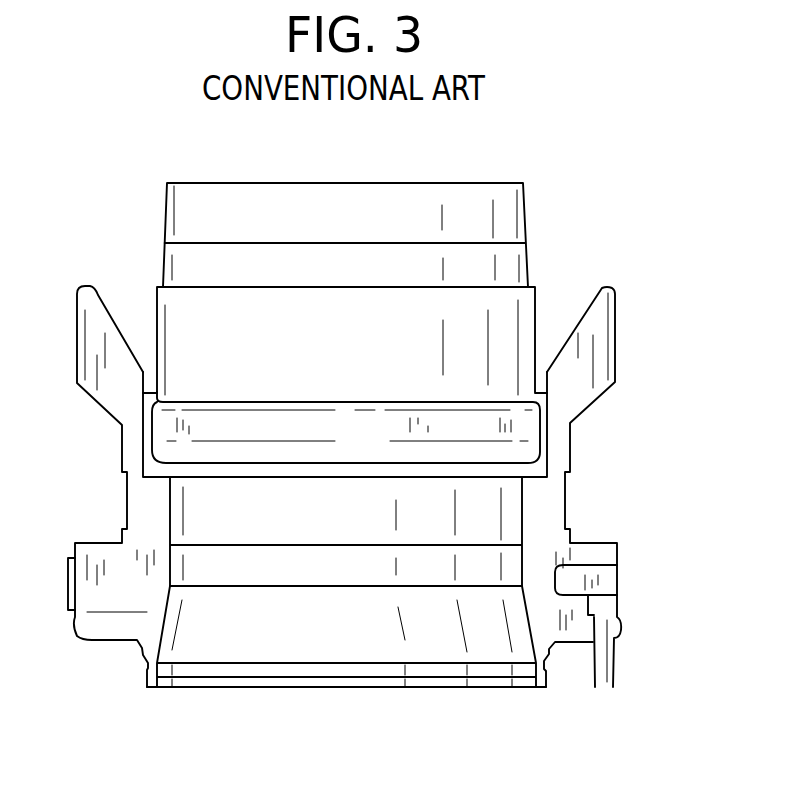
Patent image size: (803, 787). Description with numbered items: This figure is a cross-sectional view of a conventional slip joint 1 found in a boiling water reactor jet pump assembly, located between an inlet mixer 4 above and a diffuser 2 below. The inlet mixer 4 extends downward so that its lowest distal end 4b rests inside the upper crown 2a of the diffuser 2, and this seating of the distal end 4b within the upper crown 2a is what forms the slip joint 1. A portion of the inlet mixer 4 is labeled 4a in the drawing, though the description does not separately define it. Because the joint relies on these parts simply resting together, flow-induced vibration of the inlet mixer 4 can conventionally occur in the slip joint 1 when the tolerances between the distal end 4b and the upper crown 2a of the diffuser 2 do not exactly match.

The slip joint 1 is at (548, 438).
The diffuser 2 is at (477, 630).
The upper crown 2a is at (570, 462).
The inlet mixer 4 is at (527, 203).
The wide portion of terminal block 4a is at (535, 312).
The lowest distal end 4b is at (153, 457).